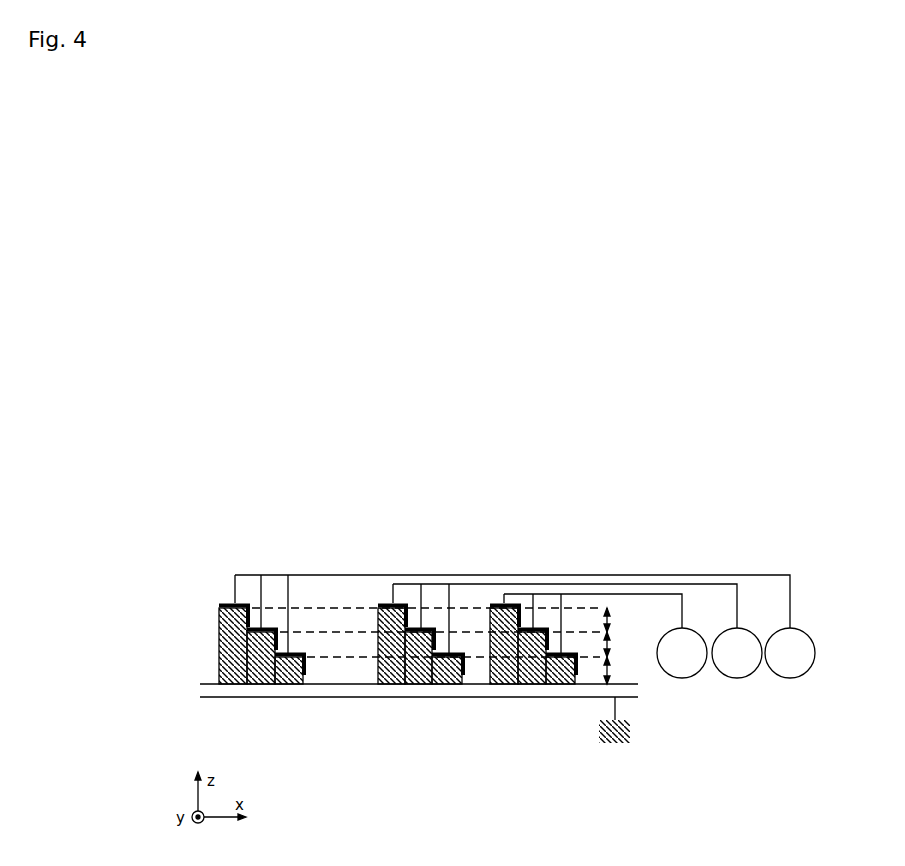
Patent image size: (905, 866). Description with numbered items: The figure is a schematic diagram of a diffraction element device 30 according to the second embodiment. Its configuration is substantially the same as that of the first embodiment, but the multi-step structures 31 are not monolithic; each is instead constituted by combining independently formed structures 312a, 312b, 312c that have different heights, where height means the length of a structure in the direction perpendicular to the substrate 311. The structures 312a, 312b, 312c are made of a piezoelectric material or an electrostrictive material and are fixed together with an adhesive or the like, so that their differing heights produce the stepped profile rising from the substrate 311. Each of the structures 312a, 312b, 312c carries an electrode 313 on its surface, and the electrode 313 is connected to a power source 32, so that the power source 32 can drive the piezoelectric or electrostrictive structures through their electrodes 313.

The diffraction element device 30 is at (569, 543).
The stepped electrode block 31 is at (405, 557).
The substrate / base plate 311 is at (200, 690).
The structure 312a is at (233, 683).
The structure 312b is at (261, 684).
The structure 312c is at (302, 684).
The electrode 313 is at (225, 605).
The power source 32 is at (779, 676).